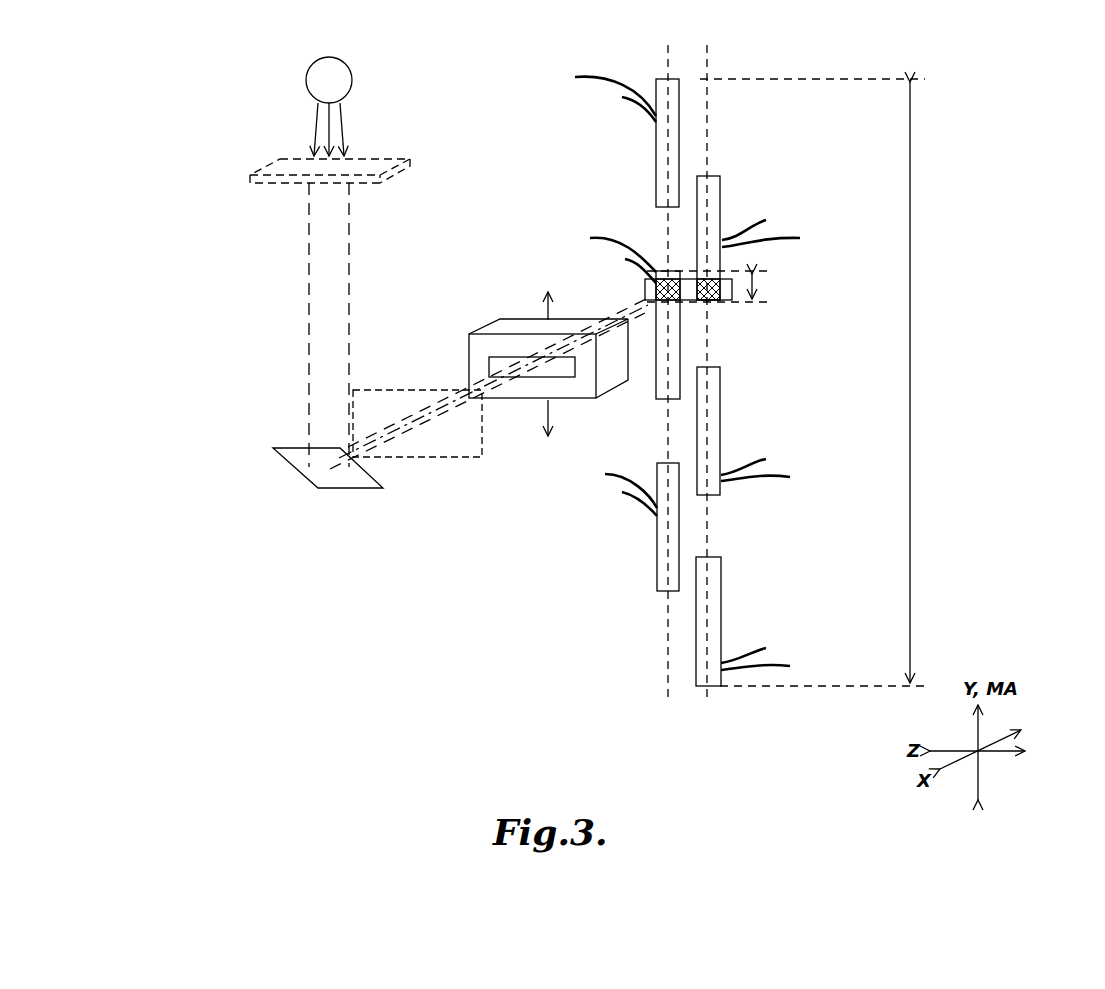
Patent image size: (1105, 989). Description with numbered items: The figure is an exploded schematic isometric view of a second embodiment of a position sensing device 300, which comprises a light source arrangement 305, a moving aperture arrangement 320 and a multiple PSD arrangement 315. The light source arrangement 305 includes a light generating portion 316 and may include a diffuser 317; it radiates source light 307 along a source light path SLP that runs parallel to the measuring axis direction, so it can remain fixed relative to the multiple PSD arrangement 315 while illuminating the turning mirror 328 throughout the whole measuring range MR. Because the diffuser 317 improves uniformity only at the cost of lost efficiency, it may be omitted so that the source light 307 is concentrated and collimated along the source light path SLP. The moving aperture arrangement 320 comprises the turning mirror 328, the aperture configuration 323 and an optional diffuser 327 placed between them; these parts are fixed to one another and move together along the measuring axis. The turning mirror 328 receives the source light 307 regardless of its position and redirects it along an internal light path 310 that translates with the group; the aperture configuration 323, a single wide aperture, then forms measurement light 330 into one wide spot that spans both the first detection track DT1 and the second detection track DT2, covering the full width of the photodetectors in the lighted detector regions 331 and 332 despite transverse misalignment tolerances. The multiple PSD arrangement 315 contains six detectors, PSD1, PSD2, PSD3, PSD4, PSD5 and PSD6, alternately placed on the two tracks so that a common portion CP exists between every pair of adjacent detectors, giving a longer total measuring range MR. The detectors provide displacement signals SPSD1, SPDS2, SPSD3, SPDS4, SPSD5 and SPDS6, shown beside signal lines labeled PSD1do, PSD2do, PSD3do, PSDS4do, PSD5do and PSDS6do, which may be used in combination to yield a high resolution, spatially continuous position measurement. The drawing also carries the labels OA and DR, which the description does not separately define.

The position sensing device 300 is at (958, 132).
The light source arrangement 305 is at (137, 137).
The source light 307 is at (350, 122).
The internal light path 310 is at (420, 420).
The multiple PSD arrangement 315 is at (688, 716).
The light generating portion 316 is at (305, 82).
The diffuser 317 is at (253, 178).
The moving aperture arrangement 320 is at (355, 540).
The aperture configuration 323 is at (522, 377).
The diffuser 327 is at (448, 447).
The turning mirror 328 is at (335, 475).
The measurement light 330 is at (648, 328).
The lighted detector region 331 is at (656, 288).
The lighted detector region 332 is at (712, 282).
The source light path SLP is at (330, 410).
The optical axis OA is at (533, 367).
The first detection track DT1 is at (668, 694).
The second detection track DT2 is at (707, 694).
The detector region DR is at (685, 79).
The common portion CP is at (768, 288).
The measuring range MR is at (912, 237).
The position sensitive detector PSD1 is at (656, 113).
The position sensitive detector PSD2 is at (722, 185).
The position sensitive detector PSD3 is at (656, 390).
The position sensitive detector PSD4 is at (721, 433).
The position sensitive detector PSD5 is at (657, 538).
The position sensitive detector PSD6 is at (721, 592).
The PSD1 detector output PSD1do is at (574, 90).
The displacement signal SPSD1 is at (625, 98).
The displacement signal SPDS2 is at (768, 220).
The PSD2 detector output PSD2do is at (802, 239).
The PSD3 detector output PSD3do is at (583, 249).
The displacement signal SPSD3 is at (625, 259).
The displacement signal SPDS4 is at (768, 459).
The PSD4 detector output PSDS4do is at (803, 478).
The PSD5 detector output PSD5do is at (600, 485).
The displacement signal SPSD5 is at (622, 492).
The displacement signal SPDS6 is at (768, 648).
The PSD6 detector output PSDS6do is at (803, 665).